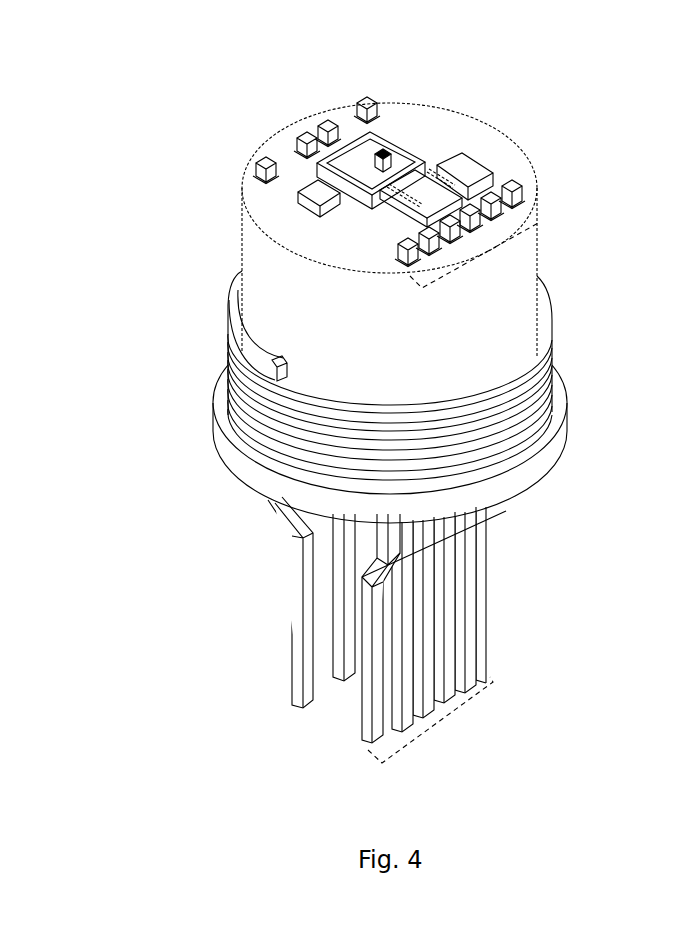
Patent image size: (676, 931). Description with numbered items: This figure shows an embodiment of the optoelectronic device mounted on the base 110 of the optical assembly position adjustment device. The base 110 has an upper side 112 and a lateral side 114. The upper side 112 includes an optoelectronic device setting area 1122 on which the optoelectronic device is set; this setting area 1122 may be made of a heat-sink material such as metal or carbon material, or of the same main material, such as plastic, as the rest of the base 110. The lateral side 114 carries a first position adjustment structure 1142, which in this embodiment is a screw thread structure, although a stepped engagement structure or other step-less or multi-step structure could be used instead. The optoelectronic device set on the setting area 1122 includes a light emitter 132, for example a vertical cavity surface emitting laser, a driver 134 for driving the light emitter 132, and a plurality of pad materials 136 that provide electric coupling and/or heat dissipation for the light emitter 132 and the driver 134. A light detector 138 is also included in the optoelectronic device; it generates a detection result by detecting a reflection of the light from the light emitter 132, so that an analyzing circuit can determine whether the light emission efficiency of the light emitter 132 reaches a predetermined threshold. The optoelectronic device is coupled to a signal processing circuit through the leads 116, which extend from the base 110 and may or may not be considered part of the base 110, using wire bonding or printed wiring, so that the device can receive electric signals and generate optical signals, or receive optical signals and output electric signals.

The base 110 is at (86, 797).
The upper side 112 is at (497, 142).
The optoelectronic device setting area 1122 is at (433, 160).
The lateral side 114 is at (262, 295).
The first position adjustment structure 1142 is at (240, 355).
The leads 116 is at (261, 146).
The light emitter 132 is at (383, 153).
The driver 134 is at (430, 208).
The pad materials 136 is at (485, 165).
The light detector 138 is at (348, 157).